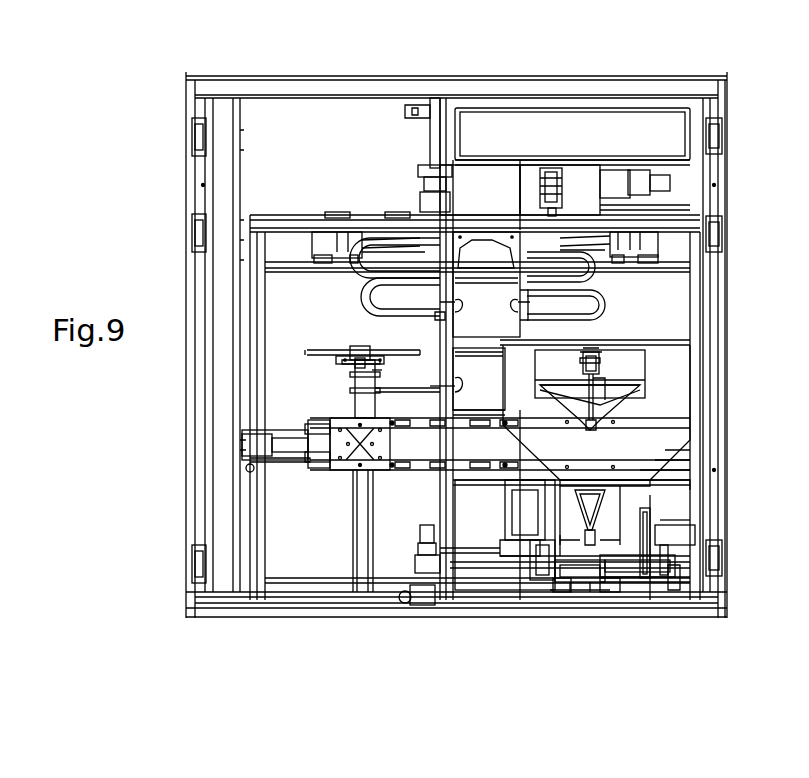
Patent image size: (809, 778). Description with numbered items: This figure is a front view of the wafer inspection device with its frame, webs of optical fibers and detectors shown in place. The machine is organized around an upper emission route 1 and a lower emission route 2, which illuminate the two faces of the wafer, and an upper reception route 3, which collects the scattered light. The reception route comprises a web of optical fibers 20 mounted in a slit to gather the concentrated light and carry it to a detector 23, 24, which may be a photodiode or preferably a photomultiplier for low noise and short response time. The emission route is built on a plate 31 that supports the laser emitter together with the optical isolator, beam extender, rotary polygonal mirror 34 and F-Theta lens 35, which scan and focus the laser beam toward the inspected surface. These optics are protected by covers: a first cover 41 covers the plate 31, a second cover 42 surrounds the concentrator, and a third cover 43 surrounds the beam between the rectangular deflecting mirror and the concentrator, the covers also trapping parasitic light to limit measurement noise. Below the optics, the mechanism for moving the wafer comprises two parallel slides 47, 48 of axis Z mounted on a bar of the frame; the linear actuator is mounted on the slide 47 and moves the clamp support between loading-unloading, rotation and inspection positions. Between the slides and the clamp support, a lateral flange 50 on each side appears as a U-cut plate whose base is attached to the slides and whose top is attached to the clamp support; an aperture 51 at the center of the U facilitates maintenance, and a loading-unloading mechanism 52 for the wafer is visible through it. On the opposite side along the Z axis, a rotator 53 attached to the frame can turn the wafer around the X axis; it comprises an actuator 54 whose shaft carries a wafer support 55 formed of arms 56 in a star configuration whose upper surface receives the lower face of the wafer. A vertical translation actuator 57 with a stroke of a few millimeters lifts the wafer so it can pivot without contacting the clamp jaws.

The upper emission route 1 is at (621, 104).
The lower emission route 2 is at (660, 510).
The upper reception route 3 is at (660, 268).
The web of optical fibers 20 is at (608, 285).
The detector 23 is at (320, 244).
The detector 24 is at (652, 242).
The plate 31 is at (528, 580).
The rotary polygonal mirror 34 is at (672, 575).
The F-Theta lens 35 is at (630, 575).
The first cover 41 is at (572, 136).
The second cover 42 is at (544, 351).
The third cover 43 is at (480, 323).
The slide 47 is at (418, 444).
The slide 48 is at (328, 475).
The lateral flange 50 is at (596, 445).
The aperture 51 is at (595, 369).
The loading-unloading mechanism 52 is at (600, 370).
The rotator 53 is at (318, 376).
The actuator 54 is at (346, 392).
The wafer support 55 is at (378, 352).
The arms 56 is at (375, 362).
The vertical translation actuator 57 is at (600, 358).